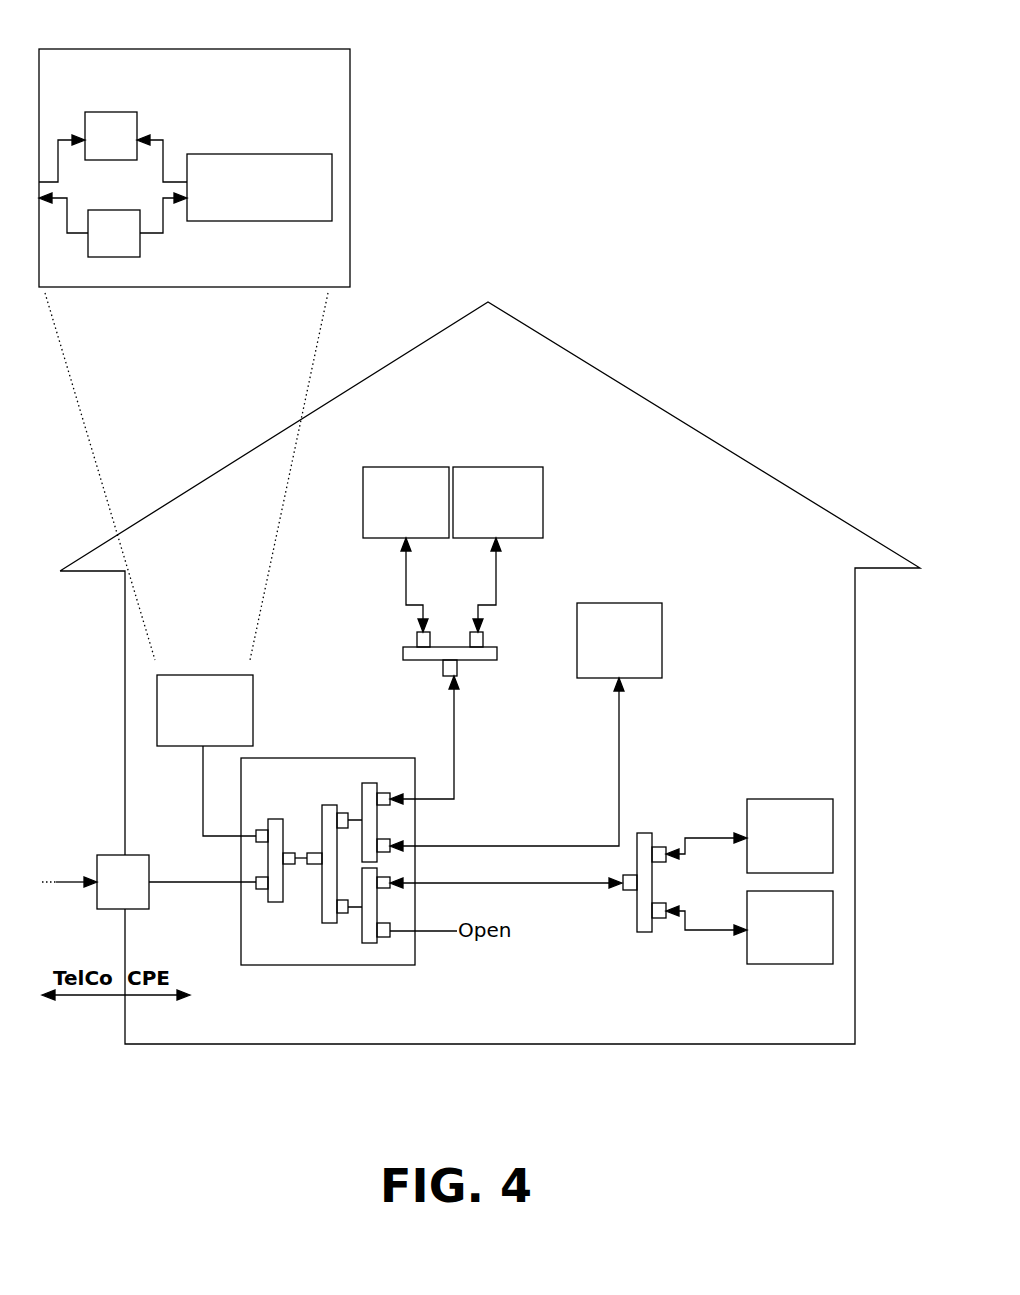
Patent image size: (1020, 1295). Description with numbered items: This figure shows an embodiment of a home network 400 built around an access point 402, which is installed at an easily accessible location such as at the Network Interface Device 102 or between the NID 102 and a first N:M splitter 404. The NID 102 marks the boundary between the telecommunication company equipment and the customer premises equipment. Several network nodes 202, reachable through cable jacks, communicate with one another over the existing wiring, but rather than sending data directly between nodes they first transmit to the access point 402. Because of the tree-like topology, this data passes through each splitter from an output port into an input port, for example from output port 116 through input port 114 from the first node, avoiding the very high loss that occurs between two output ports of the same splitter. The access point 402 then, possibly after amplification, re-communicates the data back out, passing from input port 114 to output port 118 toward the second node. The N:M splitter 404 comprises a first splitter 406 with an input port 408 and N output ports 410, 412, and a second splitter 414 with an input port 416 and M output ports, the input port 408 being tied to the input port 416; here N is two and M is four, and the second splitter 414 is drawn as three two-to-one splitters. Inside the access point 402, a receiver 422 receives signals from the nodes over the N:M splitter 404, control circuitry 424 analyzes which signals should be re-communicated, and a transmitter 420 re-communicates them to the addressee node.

The home network 400 is at (778, 325).
The access point 402 is at (194, 427).
The transmitter 420 is at (115, 257).
The receiver 422 is at (112, 112).
The control circuitry 424 is at (262, 154).
The Network Interface Device 102 is at (123, 909).
The network node 202 is at (367, 508).
The N:M splitter 404 is at (330, 758).
The first splitter 406 is at (258, 908).
The input port of first splitter 408 is at (291, 864).
The output port of first splitter 410 is at (260, 840).
The output port of first splitter 412 is at (260, 884).
The second splitter 414 is at (310, 974).
The input port of second splitter 416 is at (312, 853).
The input port 114 is at (457, 672).
The output port 116 is at (417, 645).
The output port 118 is at (483, 645).